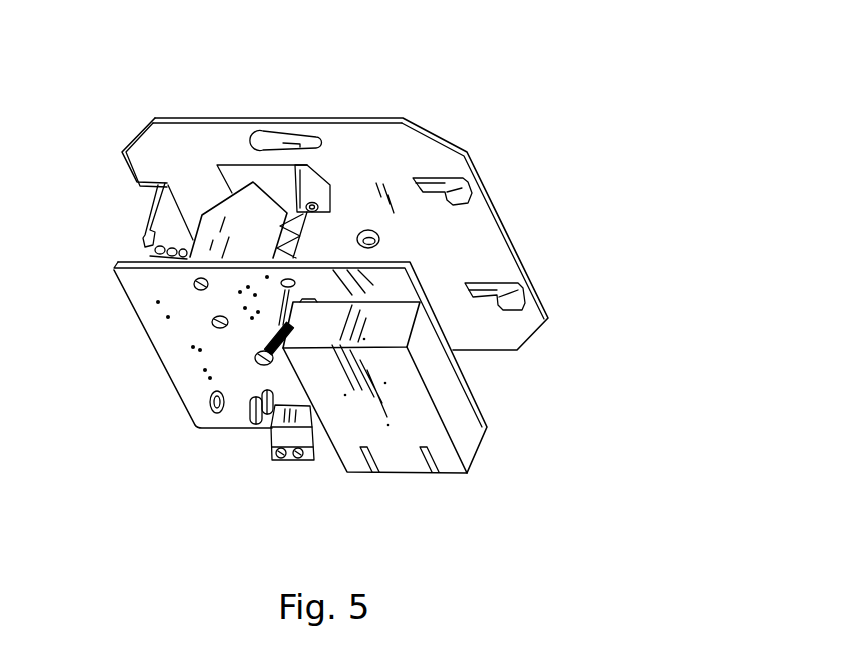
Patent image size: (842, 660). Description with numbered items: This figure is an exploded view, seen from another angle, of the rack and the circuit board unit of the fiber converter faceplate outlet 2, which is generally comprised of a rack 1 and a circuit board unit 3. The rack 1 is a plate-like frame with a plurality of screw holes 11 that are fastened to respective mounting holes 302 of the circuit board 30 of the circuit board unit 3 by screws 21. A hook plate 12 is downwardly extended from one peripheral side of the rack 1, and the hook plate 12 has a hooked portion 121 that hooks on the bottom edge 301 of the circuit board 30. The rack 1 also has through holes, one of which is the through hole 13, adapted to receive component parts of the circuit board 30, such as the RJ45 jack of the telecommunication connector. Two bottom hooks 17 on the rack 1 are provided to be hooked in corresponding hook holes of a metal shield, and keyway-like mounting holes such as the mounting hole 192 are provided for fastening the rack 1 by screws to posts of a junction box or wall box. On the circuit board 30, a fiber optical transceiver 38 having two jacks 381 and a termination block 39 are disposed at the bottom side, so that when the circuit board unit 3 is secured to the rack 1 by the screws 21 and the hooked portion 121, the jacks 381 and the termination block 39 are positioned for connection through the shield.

The rack 1 is at (455, 125).
The fiber converter faceplate outlet 2 is at (352, 92).
The circuit board unit 3 is at (301, 478).
The screw holes 11 is at (320, 197).
The hook plate 12 is at (150, 195).
The through hole 13 is at (233, 170).
The bottom hooks 17 is at (517, 303).
The screws 21 is at (262, 360).
The circuit board 30 is at (157, 350).
The fiber optical transceiver 38 is at (233, 237).
The termination block 39 is at (270, 438).
The hooked portion 121 is at (155, 262).
The keyway-like mounting hole 192 is at (284, 130).
The bottom edge 301 is at (143, 298).
The mounting holes 302 is at (281, 308).
The jacks 381 is at (373, 474).